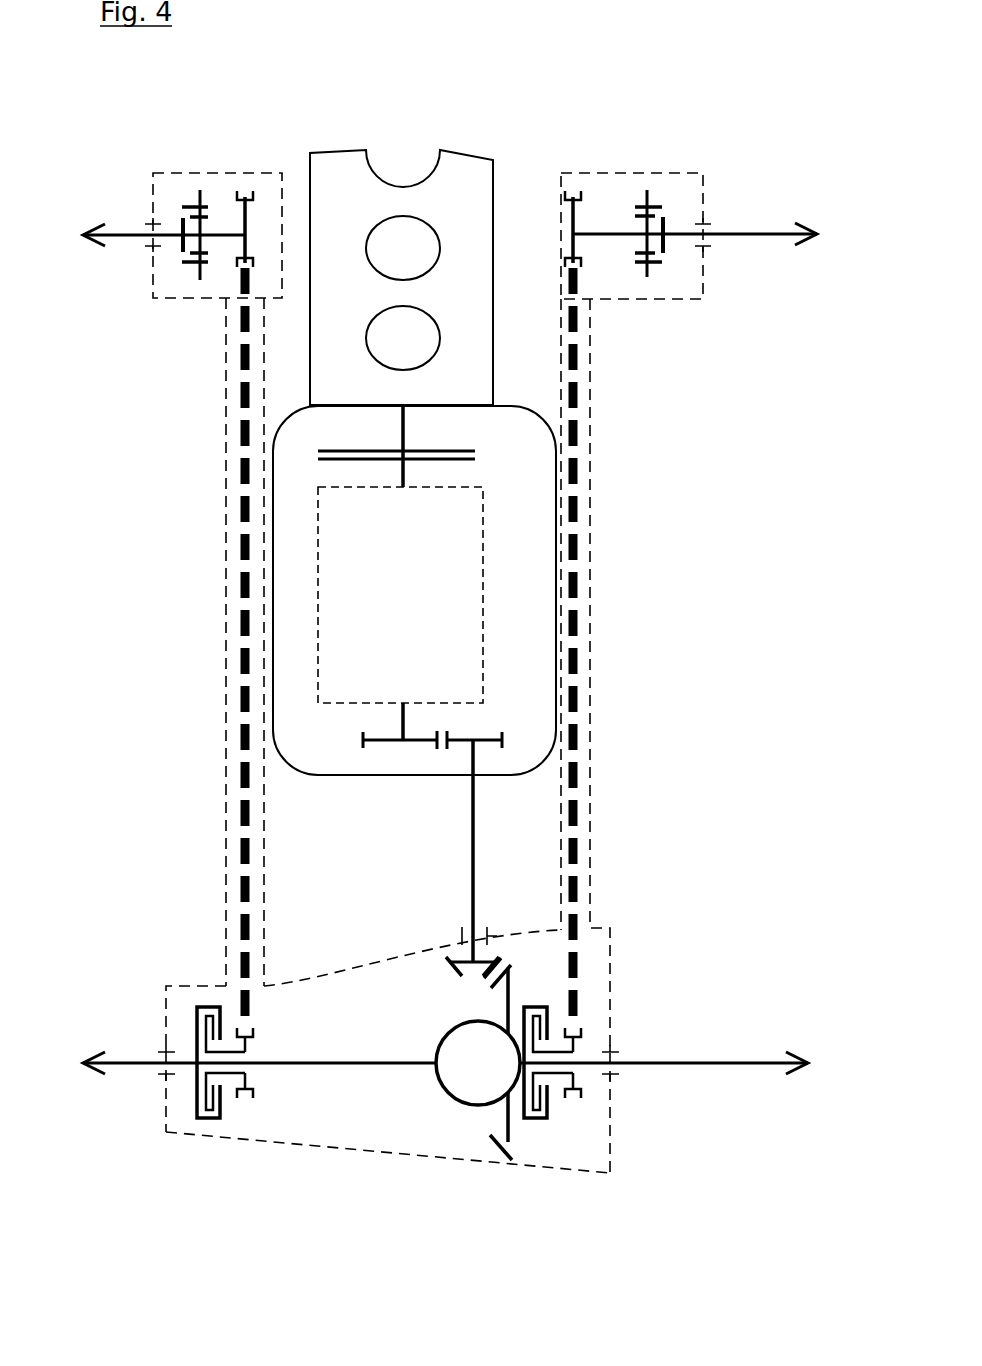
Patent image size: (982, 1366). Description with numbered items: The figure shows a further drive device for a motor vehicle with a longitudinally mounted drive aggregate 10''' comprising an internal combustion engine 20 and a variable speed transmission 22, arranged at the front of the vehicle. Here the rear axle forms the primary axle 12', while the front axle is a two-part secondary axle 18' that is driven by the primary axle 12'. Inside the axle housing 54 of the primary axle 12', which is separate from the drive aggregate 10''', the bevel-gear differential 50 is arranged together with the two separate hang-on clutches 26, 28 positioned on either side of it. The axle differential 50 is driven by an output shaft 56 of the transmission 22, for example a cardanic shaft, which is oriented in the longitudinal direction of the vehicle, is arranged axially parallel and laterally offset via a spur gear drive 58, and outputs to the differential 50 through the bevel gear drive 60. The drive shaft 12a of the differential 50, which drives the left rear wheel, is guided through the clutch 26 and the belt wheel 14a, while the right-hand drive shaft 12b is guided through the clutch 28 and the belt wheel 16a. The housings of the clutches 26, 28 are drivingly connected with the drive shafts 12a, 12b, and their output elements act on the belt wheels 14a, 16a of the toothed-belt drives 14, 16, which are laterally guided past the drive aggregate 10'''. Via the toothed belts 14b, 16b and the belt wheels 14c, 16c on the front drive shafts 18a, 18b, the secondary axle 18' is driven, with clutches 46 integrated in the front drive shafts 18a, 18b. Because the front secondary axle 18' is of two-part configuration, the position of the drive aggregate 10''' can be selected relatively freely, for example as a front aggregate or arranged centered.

The drive aggregate 10''' is at (455, 642).
The primary axle 12' is at (444, 1052).
The drive shaft 12a is at (136, 1060).
The drive shaft 12b is at (708, 1066).
The toothed-belt drive 14 is at (238, 589).
The belt wheel 14a is at (242, 1100).
The toothed belt 14b is at (240, 863).
The belt wheel 14c is at (245, 193).
The toothed-belt drive 16 is at (578, 553).
The belt wheel 16a is at (571, 1100).
The toothed belt 16b is at (578, 743).
The belt wheel 16c is at (573, 195).
The secondary axle 18' is at (455, 245).
The front drive shaft 18a is at (130, 233).
The front drive shaft 18b is at (745, 233).
The internal combustion engine 20 is at (478, 216).
The variable speed transmission 22 is at (418, 607).
The hang-on clutch 26 is at (210, 1127).
The hang-on clutch 28 is at (540, 1140).
The clutch 46 is at (189, 277).
The bevel-gear differential 50 is at (436, 1104).
The axle housing 54 is at (421, 1160).
The output shaft 56 is at (472, 877).
The spur gear drive 58 is at (437, 755).
The bevel gear drive 60 is at (509, 953).